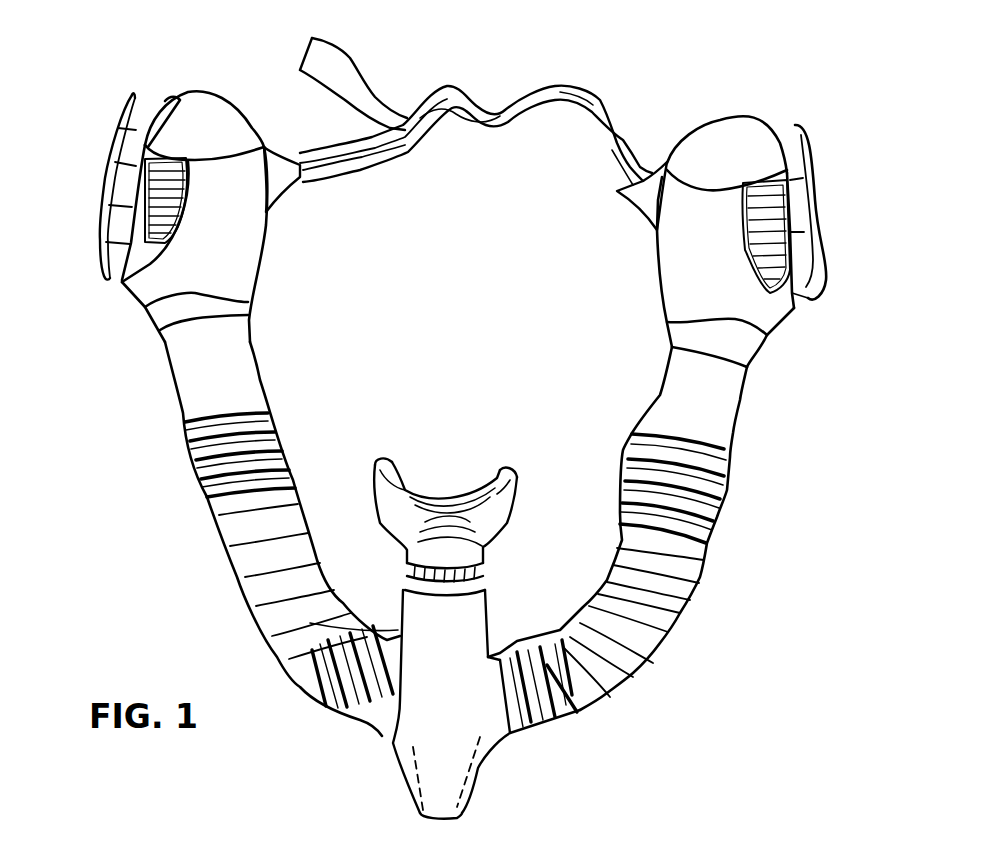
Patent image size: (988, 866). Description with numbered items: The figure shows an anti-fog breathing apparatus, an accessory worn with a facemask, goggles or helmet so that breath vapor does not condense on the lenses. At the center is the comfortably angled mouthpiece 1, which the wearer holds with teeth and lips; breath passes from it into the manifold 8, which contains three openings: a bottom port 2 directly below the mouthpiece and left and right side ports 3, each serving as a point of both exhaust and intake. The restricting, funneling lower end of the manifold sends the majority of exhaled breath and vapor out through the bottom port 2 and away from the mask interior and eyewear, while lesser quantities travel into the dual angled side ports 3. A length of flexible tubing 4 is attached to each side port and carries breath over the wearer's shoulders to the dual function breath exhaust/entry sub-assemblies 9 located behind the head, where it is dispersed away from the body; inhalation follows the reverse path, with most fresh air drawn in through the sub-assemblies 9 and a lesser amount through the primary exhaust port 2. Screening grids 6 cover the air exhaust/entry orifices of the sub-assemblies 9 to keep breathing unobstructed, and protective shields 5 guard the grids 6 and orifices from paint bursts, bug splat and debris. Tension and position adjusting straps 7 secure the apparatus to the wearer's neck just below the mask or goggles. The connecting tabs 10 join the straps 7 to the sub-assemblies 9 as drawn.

The mouthpiece 1 is at (400, 497).
The bottom port 2 is at (457, 818).
The side ports 3 is at (573, 710).
The flexible tubing 4 is at (315, 648).
The protective shields 5 is at (117, 163).
The screening grids 6 is at (767, 227).
The tension and position adjusting straps 7 is at (583, 92).
The manifold 8 is at (430, 707).
The dual function breath exhaust/entry sub-assemblies 9 is at (693, 225).
The connecting tab 10 is at (643, 193).